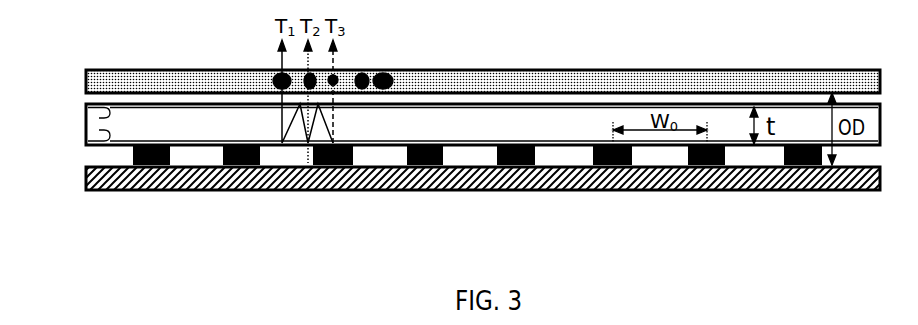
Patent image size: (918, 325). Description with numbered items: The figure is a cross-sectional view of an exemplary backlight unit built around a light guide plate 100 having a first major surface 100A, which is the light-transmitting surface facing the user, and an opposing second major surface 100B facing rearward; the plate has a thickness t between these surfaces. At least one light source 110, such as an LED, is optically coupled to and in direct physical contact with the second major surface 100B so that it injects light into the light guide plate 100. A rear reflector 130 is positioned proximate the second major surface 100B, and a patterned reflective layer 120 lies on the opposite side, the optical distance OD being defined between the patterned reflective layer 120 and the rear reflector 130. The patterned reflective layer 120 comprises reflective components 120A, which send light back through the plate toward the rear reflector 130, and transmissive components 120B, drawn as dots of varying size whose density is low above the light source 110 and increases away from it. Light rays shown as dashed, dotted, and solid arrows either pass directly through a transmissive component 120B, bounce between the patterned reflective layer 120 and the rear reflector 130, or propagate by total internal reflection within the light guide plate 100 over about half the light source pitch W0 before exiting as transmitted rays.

The light guide plate 100 is at (497, 136).
The first major surface 100A is at (87, 117).
The second major surface 100B is at (87, 135).
The light source 110 is at (790, 167).
The patterned reflective layer 120 is at (86, 80).
The reflective component 120A is at (290, 70).
The transmissive component 120B is at (380, 58).
The rear reflector 130 is at (86, 176).